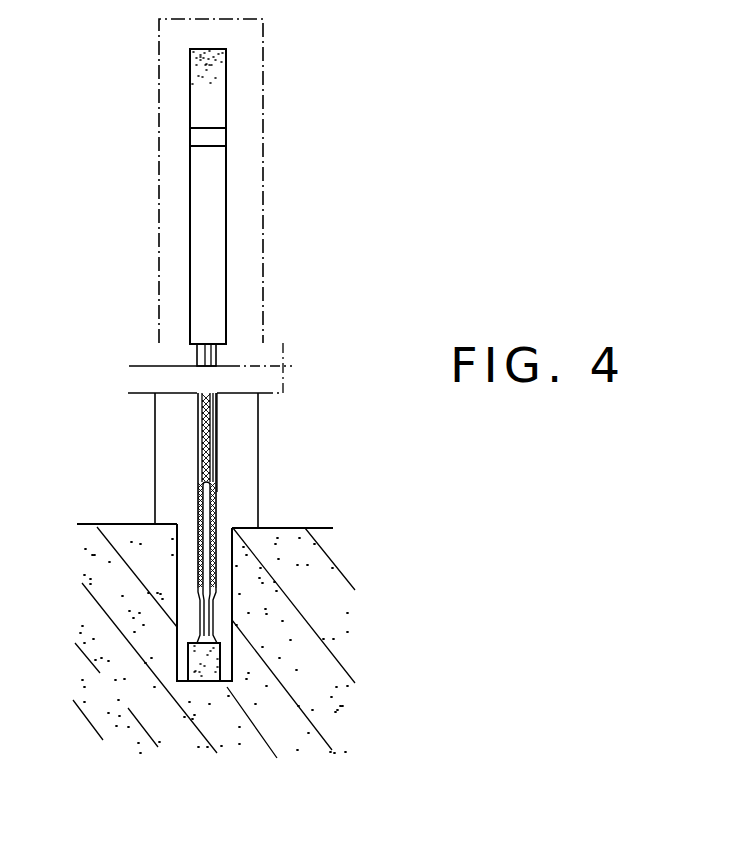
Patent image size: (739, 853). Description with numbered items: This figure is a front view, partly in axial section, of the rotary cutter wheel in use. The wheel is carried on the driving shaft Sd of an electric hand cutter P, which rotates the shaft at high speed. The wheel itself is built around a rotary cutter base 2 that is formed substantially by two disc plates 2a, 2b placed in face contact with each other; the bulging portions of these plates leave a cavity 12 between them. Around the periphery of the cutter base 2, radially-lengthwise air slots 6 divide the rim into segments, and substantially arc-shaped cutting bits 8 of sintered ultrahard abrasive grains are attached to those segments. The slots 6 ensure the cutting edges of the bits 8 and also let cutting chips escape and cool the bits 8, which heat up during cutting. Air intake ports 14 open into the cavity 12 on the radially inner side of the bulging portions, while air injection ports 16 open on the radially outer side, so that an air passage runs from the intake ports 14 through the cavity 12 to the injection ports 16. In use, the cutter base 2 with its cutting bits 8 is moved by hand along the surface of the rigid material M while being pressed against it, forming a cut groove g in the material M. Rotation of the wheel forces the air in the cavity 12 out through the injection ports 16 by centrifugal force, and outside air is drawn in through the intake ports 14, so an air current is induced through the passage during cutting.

The electric hand cutter P is at (264, 117).
The cutting bit 8 is at (200, 89).
The air slot 6 is at (200, 137).
The air injection port 16 is at (213, 361).
The driving shaft Sd is at (283, 343).
The rotary cutter base 2 is at (50, 398).
The disc plate 2a is at (200, 421).
The disc plate 2b is at (200, 457).
The cavity 12 is at (197, 528).
The air intake port 14 is at (217, 492).
The cut groove g is at (225, 540).
The rigid material M is at (124, 692).